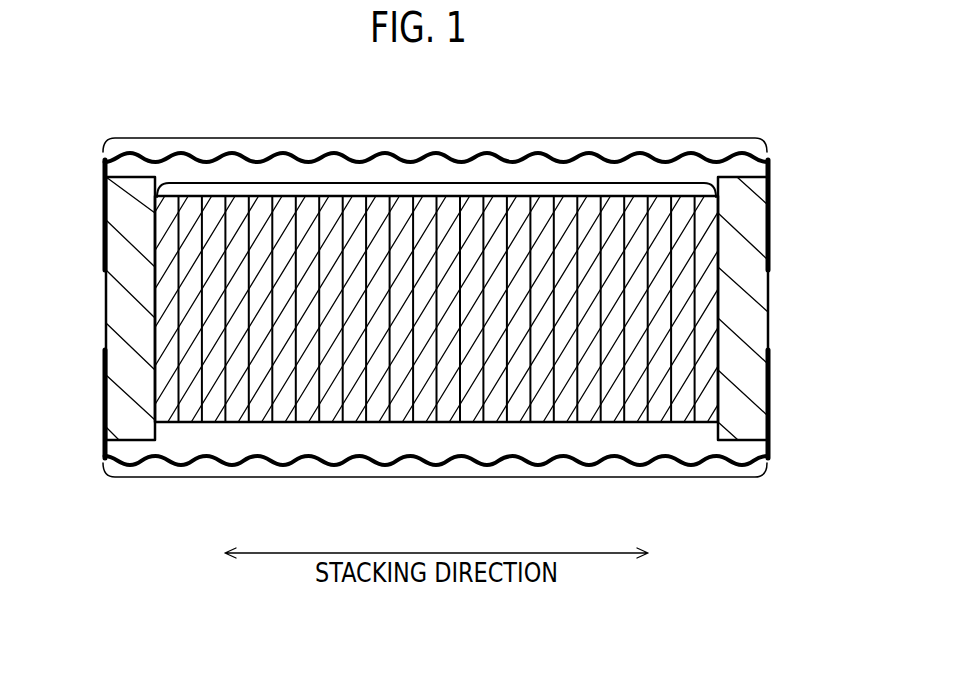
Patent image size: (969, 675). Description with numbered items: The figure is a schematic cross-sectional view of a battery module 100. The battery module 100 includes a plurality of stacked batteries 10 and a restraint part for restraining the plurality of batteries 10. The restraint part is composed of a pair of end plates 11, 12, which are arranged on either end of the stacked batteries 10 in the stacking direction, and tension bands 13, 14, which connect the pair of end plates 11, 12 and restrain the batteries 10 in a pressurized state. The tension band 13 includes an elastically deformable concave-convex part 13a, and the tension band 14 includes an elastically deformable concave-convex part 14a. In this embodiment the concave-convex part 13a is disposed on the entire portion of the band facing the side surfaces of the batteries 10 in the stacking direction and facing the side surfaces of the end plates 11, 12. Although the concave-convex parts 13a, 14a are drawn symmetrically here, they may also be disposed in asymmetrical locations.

The battery module 100 is at (103, 124).
The stacked batteries 10 is at (447, 157).
The end plate 11 is at (122, 309).
The end plate 12 is at (760, 317).
The tension band 13 is at (772, 222).
The concave-convex part 13a is at (437, 183).
The tension band 14 is at (772, 393).
The concave-convex part 14a is at (438, 467).